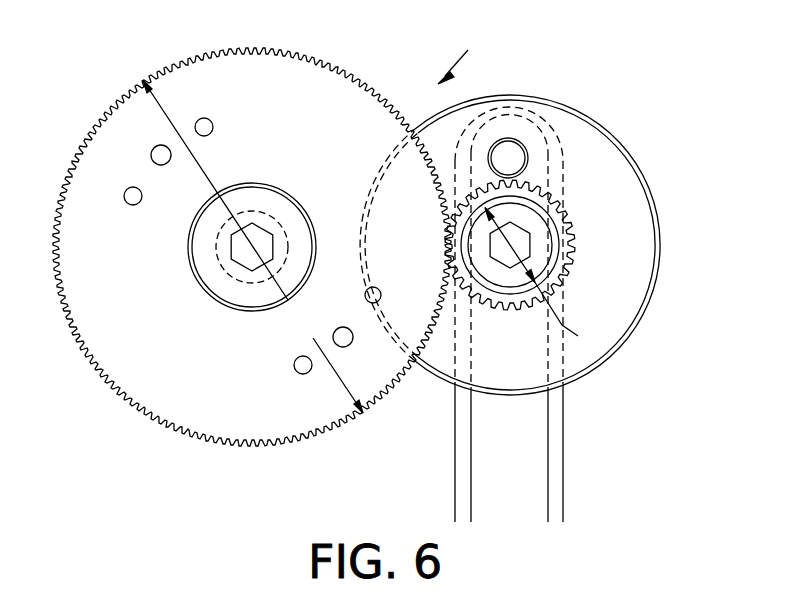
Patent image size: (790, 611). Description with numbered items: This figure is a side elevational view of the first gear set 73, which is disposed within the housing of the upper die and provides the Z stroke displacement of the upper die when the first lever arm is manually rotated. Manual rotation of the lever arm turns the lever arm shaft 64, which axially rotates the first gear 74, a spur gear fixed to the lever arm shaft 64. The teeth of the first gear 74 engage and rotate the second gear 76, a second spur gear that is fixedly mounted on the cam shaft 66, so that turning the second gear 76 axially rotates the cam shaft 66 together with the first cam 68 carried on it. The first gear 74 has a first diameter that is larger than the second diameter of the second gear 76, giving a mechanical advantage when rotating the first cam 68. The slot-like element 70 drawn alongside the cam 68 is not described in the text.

The hub 64 is at (220, 275).
The hex shaft 66 is at (516, 238).
The disc 68 is at (588, 118).
The arm slot 70 is at (535, 453).
The rotation direction arrow 73 is at (474, 27).
The large gear 74 is at (160, 378).
The small gear 76 is at (567, 260).